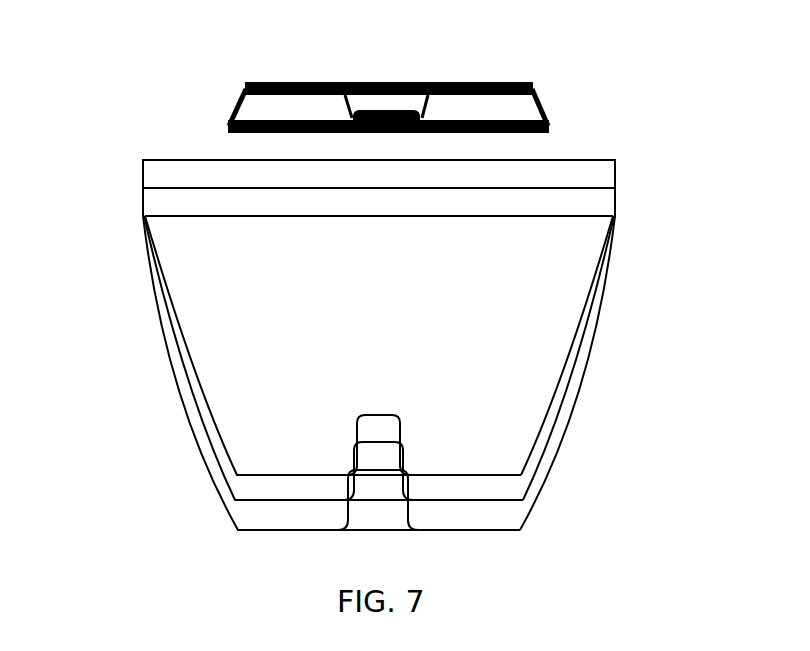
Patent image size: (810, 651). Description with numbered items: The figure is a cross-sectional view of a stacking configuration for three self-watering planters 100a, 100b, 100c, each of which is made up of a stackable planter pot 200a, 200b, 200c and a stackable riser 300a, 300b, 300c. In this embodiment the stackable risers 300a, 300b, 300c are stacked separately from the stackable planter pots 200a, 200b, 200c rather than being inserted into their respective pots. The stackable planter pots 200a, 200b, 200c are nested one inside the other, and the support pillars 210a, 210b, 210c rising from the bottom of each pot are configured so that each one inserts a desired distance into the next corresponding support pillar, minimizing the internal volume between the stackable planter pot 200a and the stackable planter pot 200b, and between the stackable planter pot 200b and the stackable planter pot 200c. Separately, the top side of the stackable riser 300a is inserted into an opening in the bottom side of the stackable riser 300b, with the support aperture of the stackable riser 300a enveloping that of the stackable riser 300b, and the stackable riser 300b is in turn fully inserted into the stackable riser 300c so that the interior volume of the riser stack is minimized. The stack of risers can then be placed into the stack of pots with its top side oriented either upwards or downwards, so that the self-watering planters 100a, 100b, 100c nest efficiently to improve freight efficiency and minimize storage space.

The self-watering planter 100a is at (373, 345).
The self-watering planter 100b is at (373, 326).
The self-watering planter 100c is at (412, 289).
The stackable planter pot 200a is at (609, 282).
The stackable planter pot 200b is at (616, 201).
The stackable planter pot 200c is at (616, 170).
The support pillar 210a is at (397, 508).
The support pillar 210b is at (397, 461).
The support pillar 210c is at (392, 426).
The stackable riser 300a is at (537, 100).
The stackable riser 300b is at (535, 90).
The stackable riser 300c is at (532, 82).